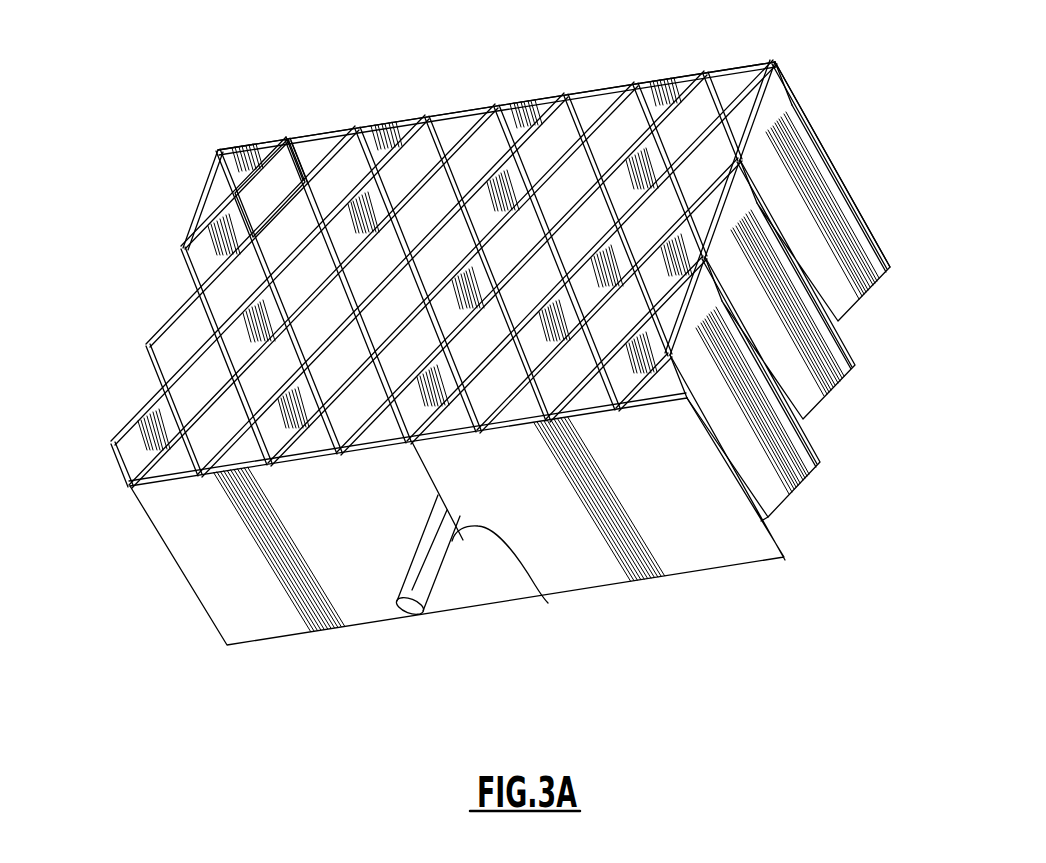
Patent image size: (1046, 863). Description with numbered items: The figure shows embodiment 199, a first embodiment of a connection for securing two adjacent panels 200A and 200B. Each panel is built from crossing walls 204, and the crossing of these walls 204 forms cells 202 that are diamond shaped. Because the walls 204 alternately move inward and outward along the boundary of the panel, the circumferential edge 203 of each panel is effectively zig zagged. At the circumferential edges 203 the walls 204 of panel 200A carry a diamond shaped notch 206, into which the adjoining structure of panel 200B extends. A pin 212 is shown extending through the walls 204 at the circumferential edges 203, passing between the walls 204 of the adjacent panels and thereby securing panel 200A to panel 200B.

The embodiment 199 is at (833, 100).
The panel 200A is at (145, 282).
The panel 200B is at (867, 320).
The cell 202 is at (277, 180).
The circumferential edge 203 is at (497, 106).
The wall 204 is at (313, 170).
The diamond shaped notch 206 is at (548, 603).
The pin 212 is at (402, 597).